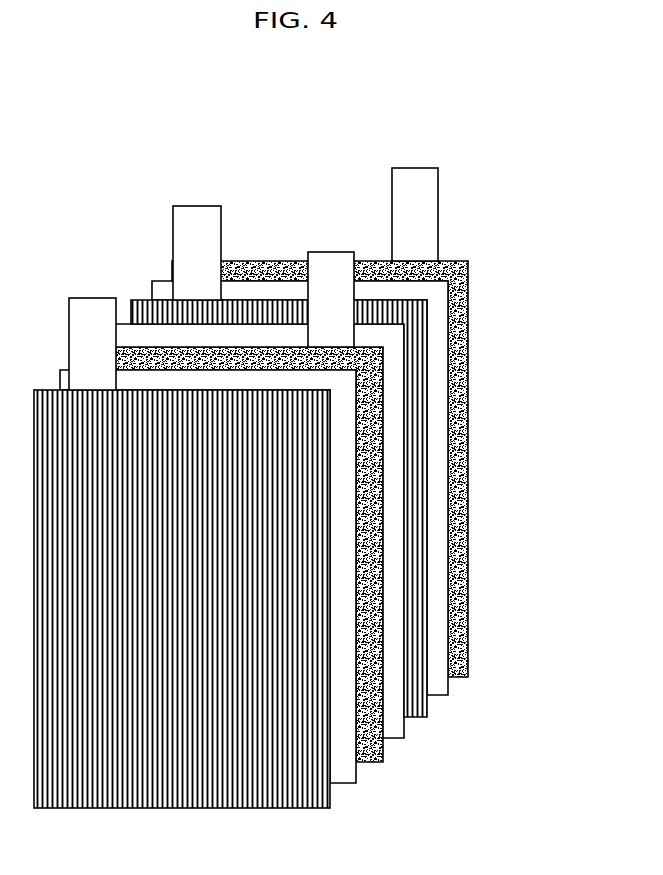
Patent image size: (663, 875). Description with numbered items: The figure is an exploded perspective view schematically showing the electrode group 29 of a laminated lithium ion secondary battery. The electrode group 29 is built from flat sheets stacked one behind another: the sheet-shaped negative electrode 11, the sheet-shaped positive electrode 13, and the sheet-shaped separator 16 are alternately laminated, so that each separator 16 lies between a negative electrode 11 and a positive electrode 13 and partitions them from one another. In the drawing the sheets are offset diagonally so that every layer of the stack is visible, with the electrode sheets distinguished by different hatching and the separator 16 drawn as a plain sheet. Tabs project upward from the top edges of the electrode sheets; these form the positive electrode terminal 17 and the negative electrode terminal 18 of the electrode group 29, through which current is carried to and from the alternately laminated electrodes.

The electrode group 29 is at (310, 108).
The negative electrode 11 is at (457, 357).
The positive electrode 13 is at (417, 538).
The separator 16 is at (437, 453).
The positive electrode terminal 17 is at (190, 226).
The negative electrode terminal 18 is at (428, 190).